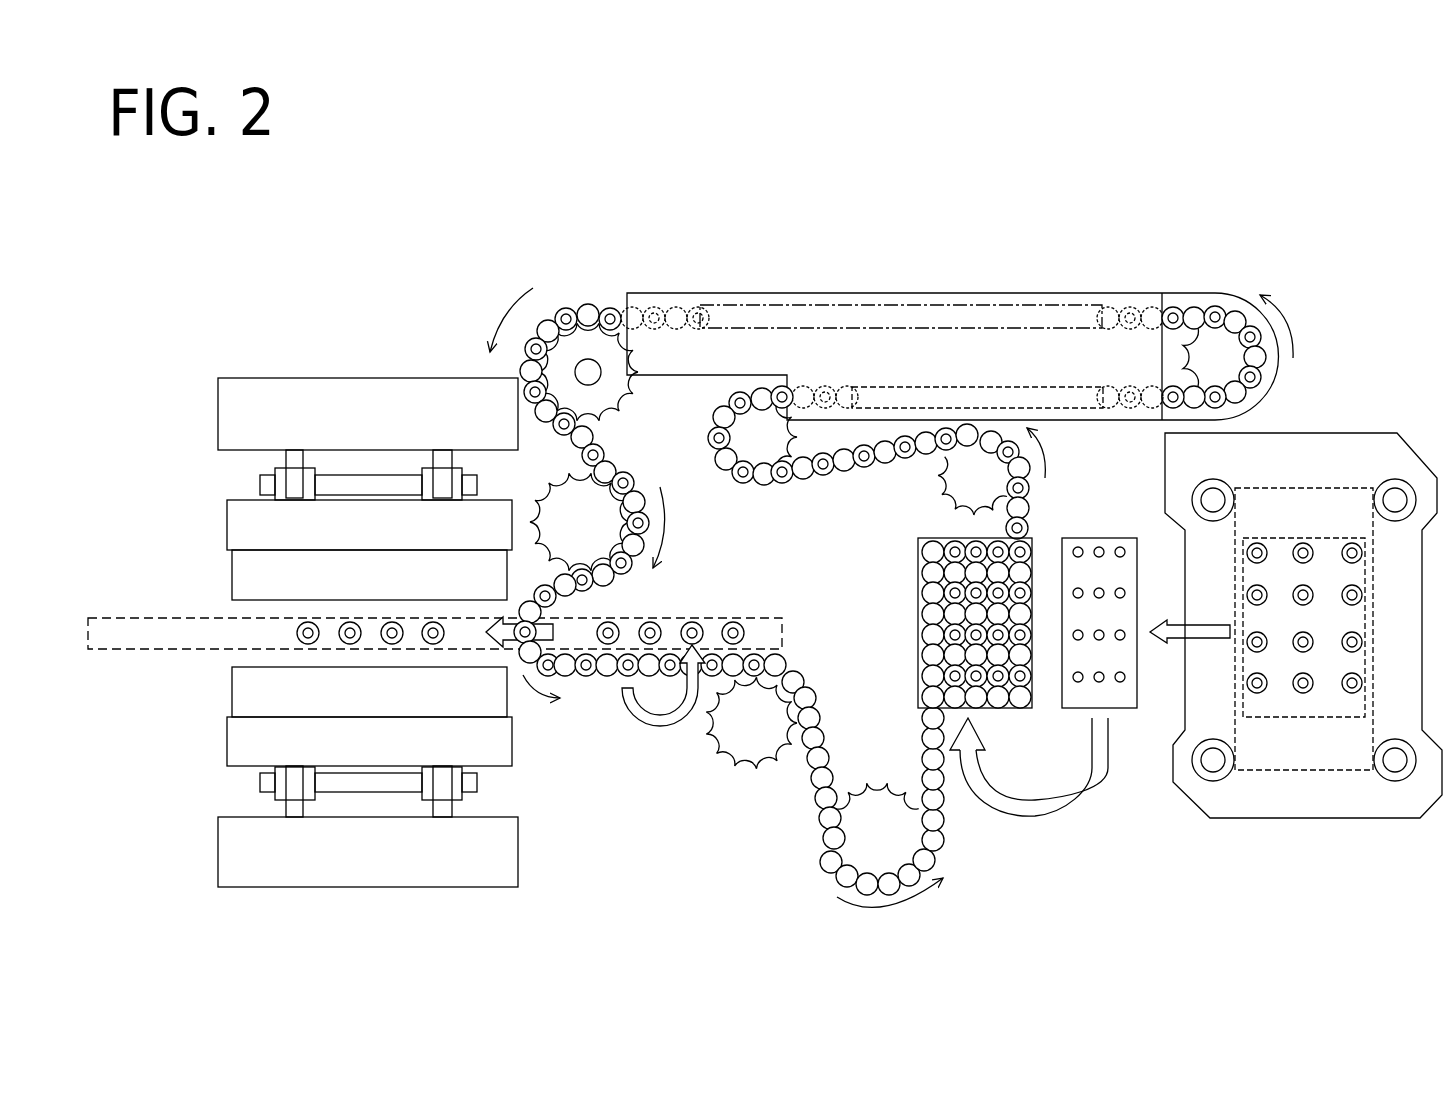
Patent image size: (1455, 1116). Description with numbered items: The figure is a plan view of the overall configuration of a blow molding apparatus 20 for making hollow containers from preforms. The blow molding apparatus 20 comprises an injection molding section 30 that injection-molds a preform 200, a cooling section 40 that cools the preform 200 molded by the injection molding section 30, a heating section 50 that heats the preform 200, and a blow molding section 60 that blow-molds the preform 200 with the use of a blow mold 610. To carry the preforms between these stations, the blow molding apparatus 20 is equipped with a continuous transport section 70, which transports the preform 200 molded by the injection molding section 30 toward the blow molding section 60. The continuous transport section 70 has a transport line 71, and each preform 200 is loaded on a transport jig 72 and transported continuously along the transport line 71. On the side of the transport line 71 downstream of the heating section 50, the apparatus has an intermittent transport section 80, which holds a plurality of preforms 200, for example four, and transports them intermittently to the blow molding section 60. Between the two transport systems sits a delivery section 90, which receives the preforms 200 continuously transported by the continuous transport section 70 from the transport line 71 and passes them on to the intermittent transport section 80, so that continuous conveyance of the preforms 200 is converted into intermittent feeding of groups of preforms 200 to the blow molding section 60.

The blow molding apparatus 20 is at (1258, 228).
The injection molding section 30 is at (1405, 430).
The cooling section 40 is at (1047, 722).
The heating section 50 is at (925, 290).
The blow molding section 60 is at (313, 338).
The blow mold 610 is at (185, 598).
The continuous transport section 70 is at (767, 482).
The transport line 71 is at (773, 490).
The transport jig 72 is at (818, 780).
The intermittent transport section 80 is at (790, 635).
The delivery section 90 is at (663, 737).
The preform 200 is at (1023, 530).